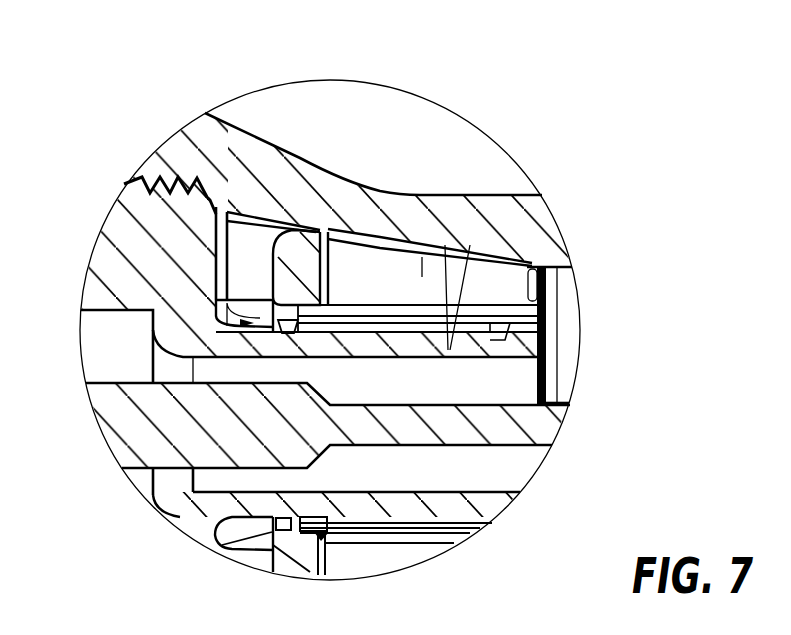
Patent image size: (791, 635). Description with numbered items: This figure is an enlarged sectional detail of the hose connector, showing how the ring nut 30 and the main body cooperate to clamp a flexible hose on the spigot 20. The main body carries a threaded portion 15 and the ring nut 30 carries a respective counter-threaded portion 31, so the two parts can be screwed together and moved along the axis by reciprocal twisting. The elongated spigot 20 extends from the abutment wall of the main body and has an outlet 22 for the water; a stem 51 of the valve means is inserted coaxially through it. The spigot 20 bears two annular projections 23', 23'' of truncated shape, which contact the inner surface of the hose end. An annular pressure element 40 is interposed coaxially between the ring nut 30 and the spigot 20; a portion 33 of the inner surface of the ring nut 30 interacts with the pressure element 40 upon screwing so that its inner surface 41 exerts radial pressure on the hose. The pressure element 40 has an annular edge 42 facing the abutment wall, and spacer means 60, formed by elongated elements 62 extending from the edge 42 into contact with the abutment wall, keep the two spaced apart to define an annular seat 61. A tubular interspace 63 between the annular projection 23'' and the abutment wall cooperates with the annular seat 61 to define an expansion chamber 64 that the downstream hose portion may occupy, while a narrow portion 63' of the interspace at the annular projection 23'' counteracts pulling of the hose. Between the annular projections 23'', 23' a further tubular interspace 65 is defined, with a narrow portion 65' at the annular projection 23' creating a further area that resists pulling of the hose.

The threaded portion 15 is at (137, 188).
The counter-threaded portion 31 is at (190, 178).
The spacer means 60 is at (243, 250).
The elongated elements 62 is at (220, 296).
The annular seat 61 is at (218, 318).
The expansion chamber 64 is at (235, 322).
The annular edge 42 is at (275, 218).
The tubular interspace 63 is at (300, 166).
The narrow portion 63' is at (359, 166).
The annular projection 23'' is at (378, 187).
The annular pressure element 40 is at (422, 277).
The inner surface 41 is at (468, 255).
The tubular interspace 65 is at (547, 221).
The ring nut 30 is at (515, 236).
The portion of the inner surface 33 is at (538, 260).
The narrow portion 65' is at (596, 335).
The annular projection 23' is at (595, 335).
The stem 51 is at (503, 420).
The outlet 22 is at (200, 480).
The spigot 20 is at (268, 506).